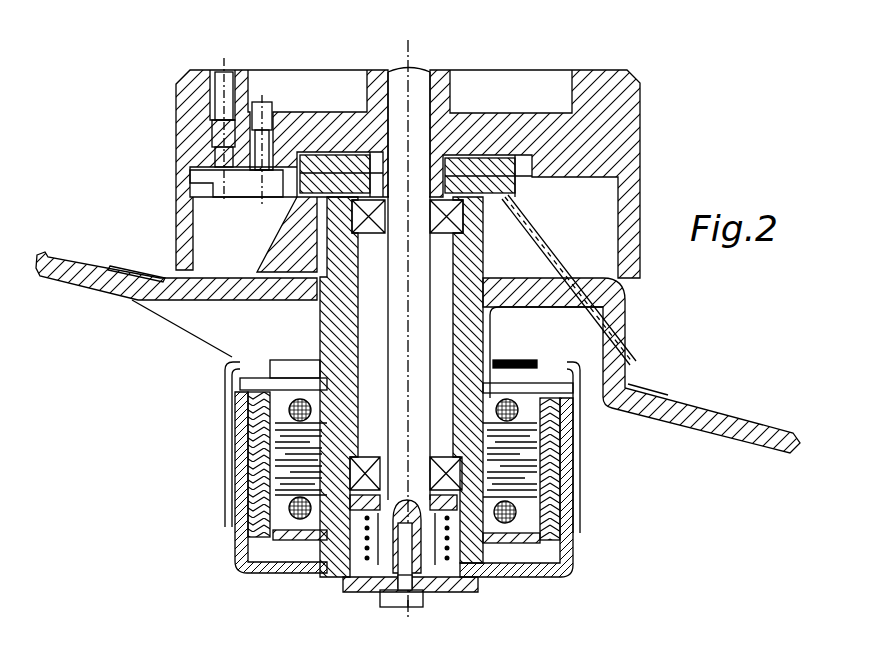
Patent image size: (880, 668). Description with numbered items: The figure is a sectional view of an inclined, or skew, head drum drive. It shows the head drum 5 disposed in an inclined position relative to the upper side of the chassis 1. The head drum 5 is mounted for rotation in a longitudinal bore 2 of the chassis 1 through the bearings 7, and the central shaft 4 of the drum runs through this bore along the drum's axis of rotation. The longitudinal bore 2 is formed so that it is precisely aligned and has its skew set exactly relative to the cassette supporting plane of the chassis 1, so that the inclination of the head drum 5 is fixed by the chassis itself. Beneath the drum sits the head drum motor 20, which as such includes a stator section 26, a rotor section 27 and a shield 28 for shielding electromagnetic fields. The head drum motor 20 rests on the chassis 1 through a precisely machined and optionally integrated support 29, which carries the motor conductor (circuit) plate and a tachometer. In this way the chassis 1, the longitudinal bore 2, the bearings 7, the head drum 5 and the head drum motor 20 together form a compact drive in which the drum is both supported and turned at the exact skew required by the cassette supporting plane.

The chassis 1 is at (760, 430).
The longitudinal bore 2 is at (455, 340).
The shaft 4 is at (420, 72).
The head drum 5 is at (627, 107).
The bearings 7 is at (447, 233).
The head drum motor 20 is at (537, 517).
The stator section 26 is at (527, 485).
The rotor section 27 is at (567, 557).
The shield 28 is at (225, 495).
The support 29 is at (240, 382).